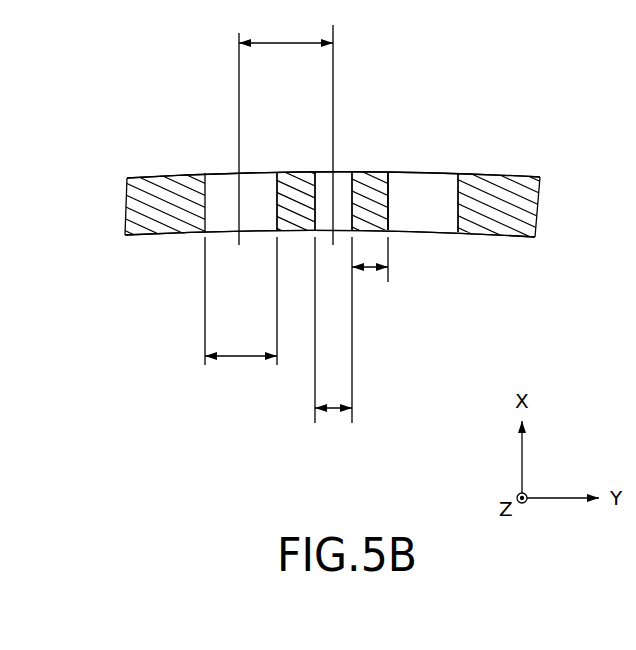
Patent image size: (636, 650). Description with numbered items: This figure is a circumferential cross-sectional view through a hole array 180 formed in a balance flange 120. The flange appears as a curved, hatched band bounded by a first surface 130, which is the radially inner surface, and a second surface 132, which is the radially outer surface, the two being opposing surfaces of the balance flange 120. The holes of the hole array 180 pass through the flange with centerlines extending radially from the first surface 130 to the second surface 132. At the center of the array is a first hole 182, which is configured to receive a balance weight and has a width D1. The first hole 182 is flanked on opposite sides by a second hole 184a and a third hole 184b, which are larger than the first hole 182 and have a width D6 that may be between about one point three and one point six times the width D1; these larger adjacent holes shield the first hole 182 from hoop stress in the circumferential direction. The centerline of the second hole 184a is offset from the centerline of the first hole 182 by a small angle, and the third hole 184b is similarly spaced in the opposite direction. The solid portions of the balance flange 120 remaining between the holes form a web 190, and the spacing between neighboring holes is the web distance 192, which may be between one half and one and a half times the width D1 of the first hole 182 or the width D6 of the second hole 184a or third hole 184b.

The balance flange 120 is at (518, 201).
The first surface 130 is at (131, 236).
The second surface 132 is at (138, 178).
The hole array 180 is at (182, 128).
The first hole 182 is at (318, 175).
The second hole 184a is at (263, 236).
The third hole 184b is at (440, 177).
The web 190 is at (375, 176).
The web distance 192 is at (372, 270).
The width D6 is at (230, 358).
The width D1 is at (335, 410).